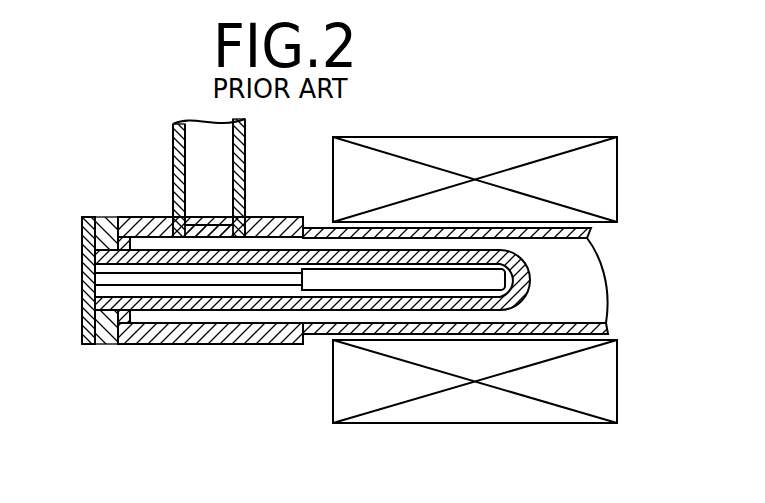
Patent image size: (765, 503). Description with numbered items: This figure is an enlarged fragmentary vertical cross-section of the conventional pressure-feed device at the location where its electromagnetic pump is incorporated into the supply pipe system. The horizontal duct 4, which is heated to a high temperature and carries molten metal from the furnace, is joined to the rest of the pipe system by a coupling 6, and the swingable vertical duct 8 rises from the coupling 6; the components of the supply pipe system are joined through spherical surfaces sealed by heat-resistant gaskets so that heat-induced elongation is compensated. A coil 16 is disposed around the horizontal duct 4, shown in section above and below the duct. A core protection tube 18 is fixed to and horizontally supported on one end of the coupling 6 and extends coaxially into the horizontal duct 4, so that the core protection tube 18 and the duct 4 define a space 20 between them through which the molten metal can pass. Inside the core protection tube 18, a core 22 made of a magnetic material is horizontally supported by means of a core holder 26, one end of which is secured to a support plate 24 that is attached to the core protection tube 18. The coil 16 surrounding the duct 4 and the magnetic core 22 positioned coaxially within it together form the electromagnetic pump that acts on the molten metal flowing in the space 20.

The horizontal duct 4 is at (399, 228).
The coupling 6 is at (152, 333).
The vertical duct 8 is at (182, 143).
The coil 16 is at (603, 172).
The core protection tube 18 is at (288, 252).
The space 20 is at (390, 317).
The core 22 is at (321, 280).
The support plate 24 is at (82, 270).
The core holder 26 is at (185, 280).